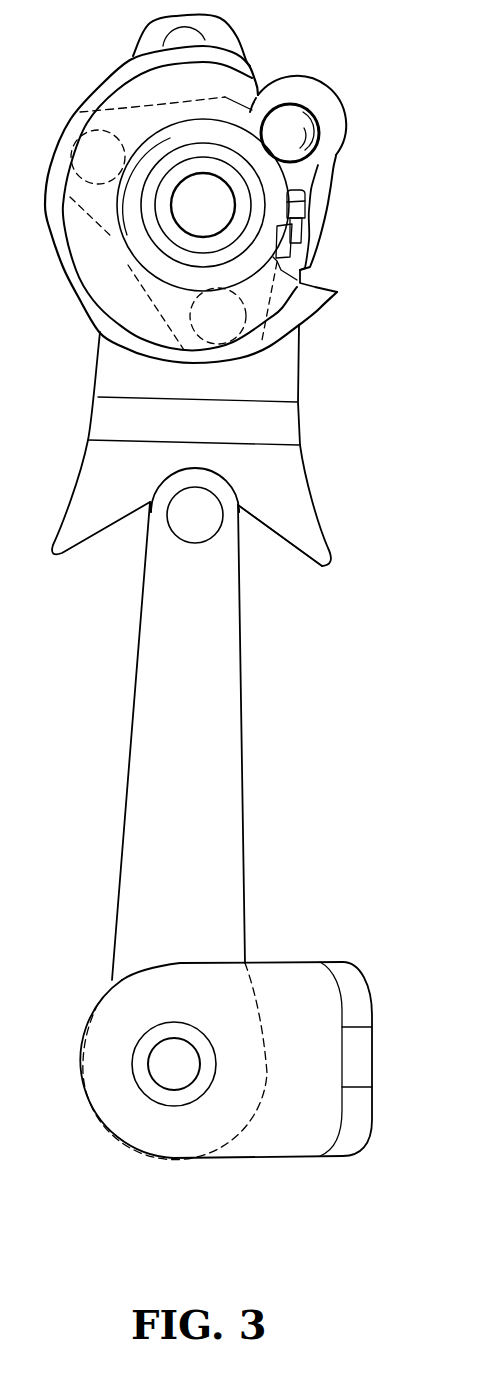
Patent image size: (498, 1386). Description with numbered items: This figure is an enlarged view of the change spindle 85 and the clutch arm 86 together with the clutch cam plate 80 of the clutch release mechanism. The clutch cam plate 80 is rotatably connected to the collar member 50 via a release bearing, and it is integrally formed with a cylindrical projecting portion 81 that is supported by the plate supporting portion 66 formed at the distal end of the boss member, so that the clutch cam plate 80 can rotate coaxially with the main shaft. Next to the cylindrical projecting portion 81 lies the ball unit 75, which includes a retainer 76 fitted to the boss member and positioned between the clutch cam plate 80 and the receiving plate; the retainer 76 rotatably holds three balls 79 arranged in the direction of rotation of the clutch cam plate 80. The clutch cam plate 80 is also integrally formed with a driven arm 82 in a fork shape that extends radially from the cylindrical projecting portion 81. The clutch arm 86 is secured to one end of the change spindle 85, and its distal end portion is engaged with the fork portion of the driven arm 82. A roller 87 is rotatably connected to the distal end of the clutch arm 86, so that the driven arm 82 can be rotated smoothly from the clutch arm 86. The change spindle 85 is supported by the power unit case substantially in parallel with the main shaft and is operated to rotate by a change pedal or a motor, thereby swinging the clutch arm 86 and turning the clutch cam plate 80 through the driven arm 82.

The collar member 50 is at (108, 287).
The plate supporting portion 66 is at (193, 160).
The ball unit 75 is at (313, 90).
The retainer 76 is at (330, 100).
The balls 79 is at (301, 126).
The clutch cam plate 80 is at (280, 380).
The cylindrical projecting portion 81 is at (147, 219).
The driven arm 82 is at (310, 522).
The change spindle 85 is at (153, 1067).
The clutch arm 86 is at (150, 755).
The roller 87 is at (182, 520).